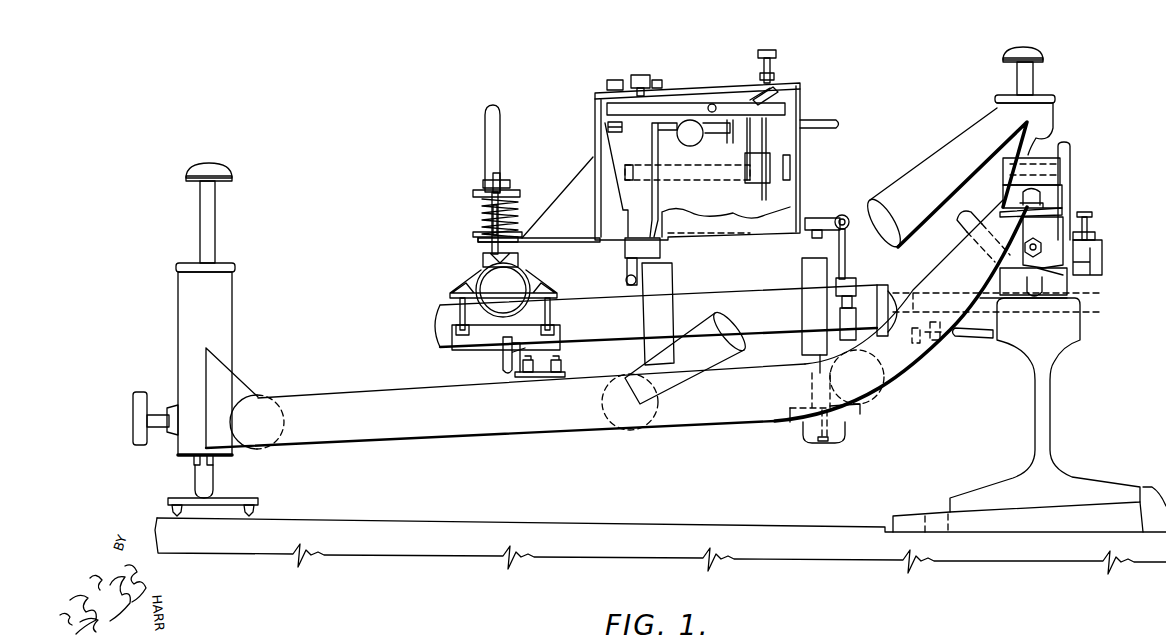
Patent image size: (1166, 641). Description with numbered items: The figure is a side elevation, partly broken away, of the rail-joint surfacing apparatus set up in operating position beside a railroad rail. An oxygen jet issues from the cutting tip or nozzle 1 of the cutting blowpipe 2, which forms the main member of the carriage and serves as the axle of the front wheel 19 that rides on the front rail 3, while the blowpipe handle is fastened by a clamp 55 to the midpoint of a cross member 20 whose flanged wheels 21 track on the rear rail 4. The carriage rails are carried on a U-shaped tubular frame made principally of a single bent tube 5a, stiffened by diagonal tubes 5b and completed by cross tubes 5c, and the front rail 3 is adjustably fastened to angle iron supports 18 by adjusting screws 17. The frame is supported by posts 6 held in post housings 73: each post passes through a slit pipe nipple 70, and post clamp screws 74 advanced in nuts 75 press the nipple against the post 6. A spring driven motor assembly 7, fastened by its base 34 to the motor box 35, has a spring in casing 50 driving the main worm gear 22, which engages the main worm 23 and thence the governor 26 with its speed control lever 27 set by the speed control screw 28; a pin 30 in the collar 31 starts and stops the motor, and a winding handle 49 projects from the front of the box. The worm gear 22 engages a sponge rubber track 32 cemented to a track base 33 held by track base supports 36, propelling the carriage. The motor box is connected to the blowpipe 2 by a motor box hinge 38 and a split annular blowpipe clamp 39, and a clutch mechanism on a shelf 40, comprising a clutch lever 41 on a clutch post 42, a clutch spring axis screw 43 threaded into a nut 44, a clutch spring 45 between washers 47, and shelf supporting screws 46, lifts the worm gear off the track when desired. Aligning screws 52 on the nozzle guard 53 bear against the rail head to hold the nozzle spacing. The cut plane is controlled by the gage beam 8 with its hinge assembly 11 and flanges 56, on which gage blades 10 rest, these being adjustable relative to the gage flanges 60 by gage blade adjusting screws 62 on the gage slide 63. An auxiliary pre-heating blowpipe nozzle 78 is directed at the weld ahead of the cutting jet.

The cutting tip or nozzle 1 is at (915, 300).
The cutting blowpipe 2 is at (767, 316).
The front rail 3 is at (812, 368).
The rear rail 4 is at (505, 375).
The bent tube 5a is at (700, 425).
The diagonal tubes 5b is at (682, 405).
The cross tubes 5c is at (612, 420).
The posts 6 is at (200, 205).
The motor assembly 7 is at (595, 95).
The gage beam 8 is at (1055, 205).
The gage blades or bars 10 is at (1095, 272).
The hinge assembly 11 is at (1068, 145).
The adjusting screws 17 is at (560, 368).
The rail plates or angle iron supports 18 is at (812, 388).
The front wheel 19 is at (805, 265).
The cross member 20 is at (522, 304).
The flanged wheels 21 is at (502, 367).
The main worm gear 22 is at (658, 215).
The main worm 23 is at (640, 75).
The governor 26 is at (695, 145).
The speed control lever 27 is at (755, 95).
The speed control screw 28 is at (770, 58).
The pin 30 is at (660, 80).
The collar 31 is at (630, 80).
The sponge rubber track 32 is at (660, 250).
The track base 33 is at (626, 278).
The base 34 is at (615, 122).
The motor box 35 is at (593, 150).
The track base supports 36 is at (660, 352).
The motor box hinge 38 is at (843, 214).
The split annular blowpipe clamp 39 is at (848, 282).
The shelf 40 is at (543, 240).
The clutch lever 41 is at (485, 115).
The clutch post 42 is at (490, 178).
The clutch spring axis screw 43 is at (475, 190).
The nut 44 is at (483, 253).
The clutch spring 45 is at (485, 205).
The shelf supporting screws 46 is at (488, 212).
The washers 47 is at (477, 233).
The winding handle 49 is at (835, 120).
The casing 50 is at (687, 186).
The aligning screws 52 is at (960, 338).
The member or nozzle guard 53 is at (917, 345).
The clamp 55 is at (450, 293).
The flanges 56 is at (1073, 160).
The gage flanges 60 is at (1095, 292).
The gage blade adjusting screws 62 is at (1092, 232).
The gage slide 63 is at (1088, 215).
The pipe nipple 70 is at (192, 460).
The post housing 73 is at (178, 305).
The post clamp screws 74 is at (152, 410).
The nuts 75 is at (175, 405).
The auxiliary blowpipe nozzle 78 is at (962, 235).